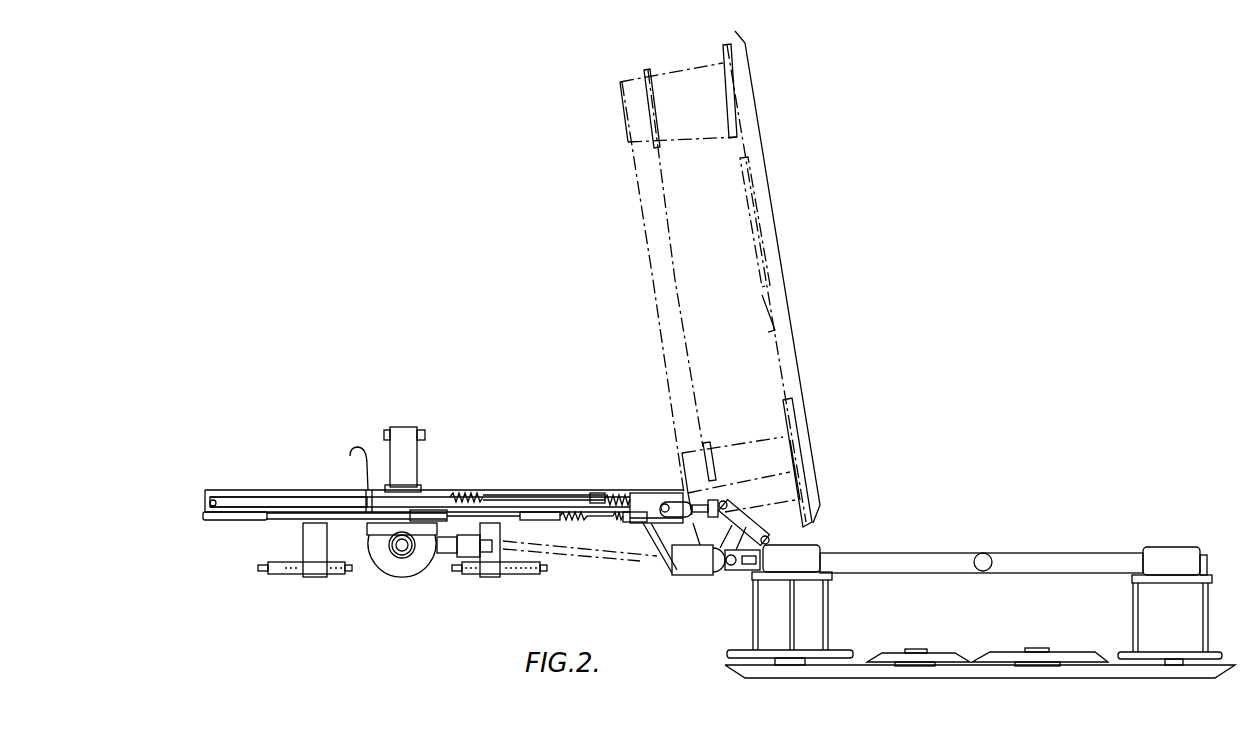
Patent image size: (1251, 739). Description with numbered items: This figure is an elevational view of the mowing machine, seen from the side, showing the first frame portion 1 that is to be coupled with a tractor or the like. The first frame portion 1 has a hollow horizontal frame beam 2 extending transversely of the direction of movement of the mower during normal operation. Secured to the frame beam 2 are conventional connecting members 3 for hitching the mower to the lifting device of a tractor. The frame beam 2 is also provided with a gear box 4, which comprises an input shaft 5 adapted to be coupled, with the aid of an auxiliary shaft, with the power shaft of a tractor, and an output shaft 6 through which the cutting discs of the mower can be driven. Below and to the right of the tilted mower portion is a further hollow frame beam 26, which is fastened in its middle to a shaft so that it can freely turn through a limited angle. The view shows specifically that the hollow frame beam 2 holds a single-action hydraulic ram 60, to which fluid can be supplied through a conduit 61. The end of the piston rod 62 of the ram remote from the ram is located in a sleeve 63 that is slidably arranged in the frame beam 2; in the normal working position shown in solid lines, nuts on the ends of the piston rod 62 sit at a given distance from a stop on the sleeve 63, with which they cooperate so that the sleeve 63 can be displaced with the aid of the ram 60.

The first frame portion 1 is at (220, 527).
The frame beam 2 is at (236, 489).
The connecting members 3 is at (405, 434).
The gear box 4 is at (393, 575).
The input shaft 5 is at (404, 549).
The output shaft 6 is at (483, 559).
The frame beam 26 is at (1057, 557).
The hydraulic ram 60 is at (284, 505).
The conduit 61 is at (353, 457).
The piston rod 62 is at (504, 498).
The sleeve 63 is at (654, 495).